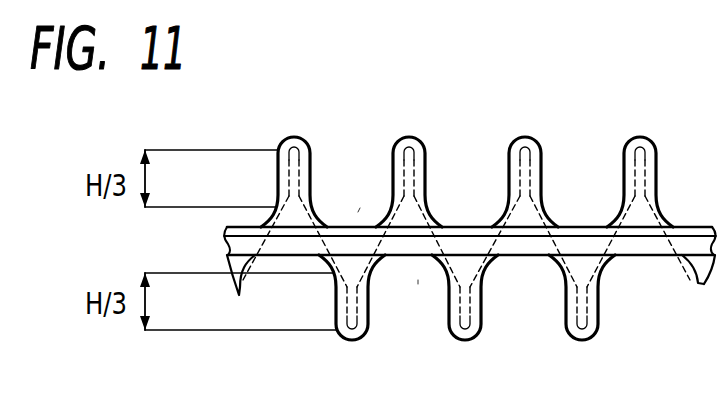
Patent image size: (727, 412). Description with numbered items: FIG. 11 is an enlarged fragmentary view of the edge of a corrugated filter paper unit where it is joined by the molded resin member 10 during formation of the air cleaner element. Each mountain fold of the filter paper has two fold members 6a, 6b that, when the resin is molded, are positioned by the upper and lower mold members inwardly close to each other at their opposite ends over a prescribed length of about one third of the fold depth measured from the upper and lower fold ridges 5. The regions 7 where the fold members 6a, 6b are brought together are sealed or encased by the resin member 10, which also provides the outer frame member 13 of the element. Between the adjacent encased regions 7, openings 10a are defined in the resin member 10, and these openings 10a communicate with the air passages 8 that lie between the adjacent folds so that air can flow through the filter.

The fold ridge 5 is at (297, 137).
The fold member 6a is at (308, 210).
The fold member 6b is at (282, 205).
The region 7 is at (308, 137).
The air passage 8 is at (474, 200).
The resin member 10 is at (360, 208).
The opening 10a is at (367, 200).
The outer frame member 13 is at (478, 228).